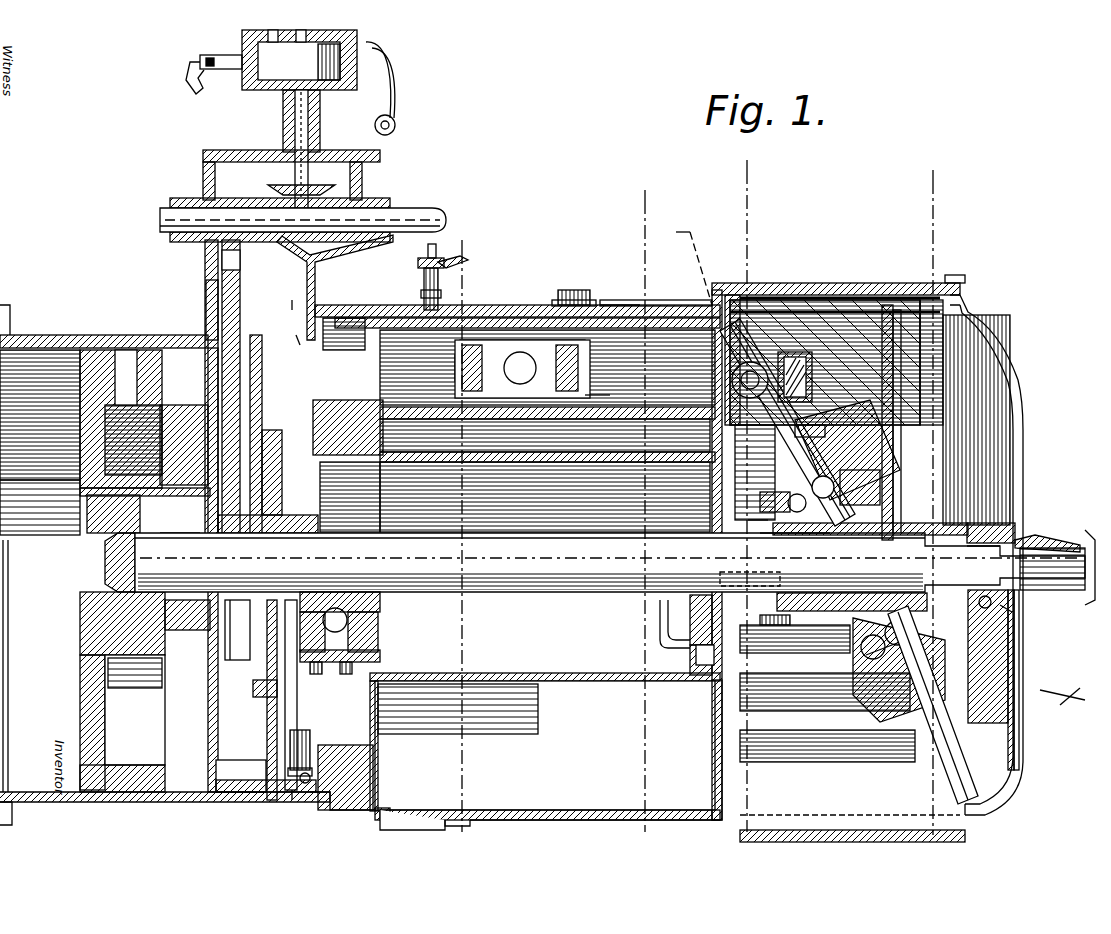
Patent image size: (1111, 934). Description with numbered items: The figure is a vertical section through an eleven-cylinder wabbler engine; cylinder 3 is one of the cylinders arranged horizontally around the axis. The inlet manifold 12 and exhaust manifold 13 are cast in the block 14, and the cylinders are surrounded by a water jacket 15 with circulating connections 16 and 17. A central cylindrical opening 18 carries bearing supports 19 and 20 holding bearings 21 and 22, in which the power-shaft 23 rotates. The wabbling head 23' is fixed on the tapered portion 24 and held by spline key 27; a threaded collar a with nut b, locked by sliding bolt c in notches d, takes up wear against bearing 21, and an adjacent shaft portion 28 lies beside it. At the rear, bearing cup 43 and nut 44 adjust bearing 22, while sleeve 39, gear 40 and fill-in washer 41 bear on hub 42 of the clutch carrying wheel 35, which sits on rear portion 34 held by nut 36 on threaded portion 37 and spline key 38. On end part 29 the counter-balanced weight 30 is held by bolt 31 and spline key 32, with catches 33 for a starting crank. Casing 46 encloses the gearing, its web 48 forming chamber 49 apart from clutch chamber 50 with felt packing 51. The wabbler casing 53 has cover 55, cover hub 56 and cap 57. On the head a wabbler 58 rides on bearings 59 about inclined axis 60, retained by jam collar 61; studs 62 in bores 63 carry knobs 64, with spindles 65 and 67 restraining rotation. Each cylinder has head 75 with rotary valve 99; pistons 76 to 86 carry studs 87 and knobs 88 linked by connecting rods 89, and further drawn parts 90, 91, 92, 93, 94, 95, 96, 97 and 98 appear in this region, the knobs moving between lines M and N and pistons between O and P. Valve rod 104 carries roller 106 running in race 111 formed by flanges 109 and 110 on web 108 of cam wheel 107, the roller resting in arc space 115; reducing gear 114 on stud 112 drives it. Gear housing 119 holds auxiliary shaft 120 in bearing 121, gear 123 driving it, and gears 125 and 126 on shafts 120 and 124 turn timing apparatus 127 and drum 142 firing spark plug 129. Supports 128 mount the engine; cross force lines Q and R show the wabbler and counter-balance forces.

The cylinder 3 is at (292, 300).
The inlet manifold 12 is at (514, 605).
The exhaust manifold 13 is at (378, 757).
The block 14 is at (555, 822).
The water jacket 15 is at (548, 750).
The water circulating connection 16 is at (425, 822).
The water circulating connection 17 is at (603, 305).
The cylindrical opening 18 is at (545, 651).
The bearing support 19 is at (683, 635).
The bearing support 20 is at (372, 650).
The antifriction combined supporting and end thrust bearing 21 is at (665, 630).
The antifriction combined supporting and end thrust bearing 22 is at (355, 605).
The power-shaft 23 is at (610, 562).
The wabbling head 23' is at (1044, 680).
The tapered portion 24 is at (940, 545).
The spline key 27 is at (795, 547).
The balls 28 is at (860, 640).
The end part 29 is at (1015, 540).
The counter-balanced weight 30 is at (1010, 690).
The bolt 31 is at (1020, 640).
The spline key 32 is at (1040, 545).
The catches 33 is at (1057, 567).
The rear portion 34 is at (180, 544).
The clutch carrying wheel 35 is at (100, 688).
The nut 36 is at (100, 535).
The threaded portion 37 is at (120, 598).
The spline key 38 is at (135, 380).
The sleeve 39 is at (295, 530).
The gear 40 is at (236, 630).
The fill-in washer 41 is at (160, 625).
The hub 42 is at (90, 650).
The bearing cup 43 is at (372, 625).
The nut 44 is at (265, 700).
The frame or casing 46 is at (165, 770).
The web 48 is at (260, 698).
The chamber 49 is at (290, 735).
The clutch chamber 50 is at (217, 767).
The felt packing 51 is at (235, 640).
The wabbler casing 53 is at (852, 818).
The cover 55 is at (1022, 750).
The cover hub 56 is at (983, 555).
The cap 57 is at (1010, 615).
The wabbler 58 is at (870, 660).
The antifriction bearings 59 is at (860, 675).
The axis 60 is at (925, 520).
The jam collar 61 is at (880, 482).
The stud 62 is at (810, 425).
The bore 63 is at (870, 455).
The bearing knob 64 is at (815, 300).
The spindle 65 is at (738, 322).
The bearing spindle 67 is at (935, 775).
The integral head 75 is at (388, 305).
The piston 76 is at (505, 305).
The piston 86 is at (580, 290).
The stud 87 is at (490, 318).
The bearing knob 88 is at (540, 330).
The connecting rod 89 is at (770, 564).
The winding 90 is at (595, 381).
The core 91 is at (790, 300).
The bar 92 is at (888, 300).
The coil 93 is at (905, 300).
The cover plate 94 is at (975, 312).
The spring 95 is at (815, 380).
The wall 96 is at (665, 330).
The coil 97 is at (845, 298).
The armature 98 is at (547, 367).
The rotary cut-off valve 99 is at (355, 325).
The rod 104 is at (330, 300).
The roller 106 is at (274, 417).
The cam wheel or gear 107 is at (245, 680).
The web 108 is at (300, 770).
The flange 109 is at (458, 709).
The flange 110 is at (255, 800).
The cam race 111 is at (378, 786).
The stud 112 is at (205, 335).
The reducing gear 114 is at (279, 332).
The arc space 115 is at (517, 492).
The gear housing 119 is at (205, 262).
The auxiliary shaft 120 is at (165, 214).
The bearing 121 is at (210, 195).
The gear 123 is at (220, 160).
The shaft 124 is at (312, 112).
The gear 125 is at (255, 175).
The gear 126 is at (380, 138).
The electric timing and distributing apparatus 127 is at (358, 52).
The engine support 128 is at (352, 200).
The spark plug 129 is at (455, 262).
The drum 142 is at (395, 100).
The line O— O is at (458, 525).
The line P— P is at (642, 521).
The cross force line Q— Q is at (988, 838).
The line M— M is at (750, 496).
The line N— N is at (935, 512).
The cross force line R— R is at (1070, 695).
The threaded collar a is at (876, 697).
The nut b is at (755, 508).
The spring-pressed sliding bolt c is at (775, 626).
The notches d is at (705, 652).